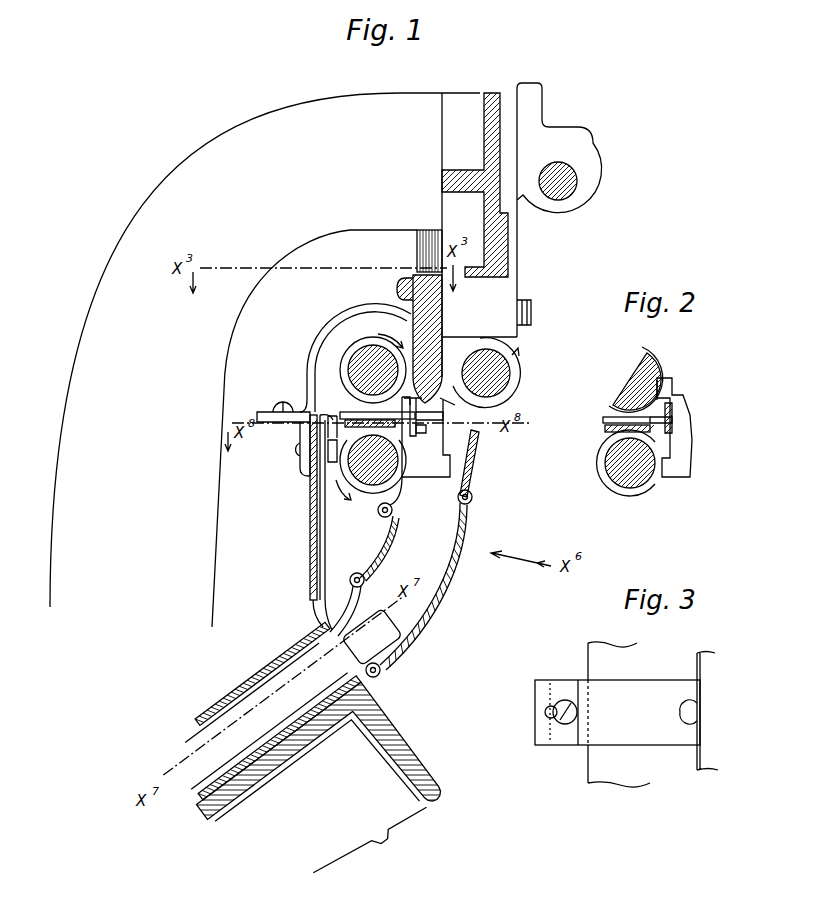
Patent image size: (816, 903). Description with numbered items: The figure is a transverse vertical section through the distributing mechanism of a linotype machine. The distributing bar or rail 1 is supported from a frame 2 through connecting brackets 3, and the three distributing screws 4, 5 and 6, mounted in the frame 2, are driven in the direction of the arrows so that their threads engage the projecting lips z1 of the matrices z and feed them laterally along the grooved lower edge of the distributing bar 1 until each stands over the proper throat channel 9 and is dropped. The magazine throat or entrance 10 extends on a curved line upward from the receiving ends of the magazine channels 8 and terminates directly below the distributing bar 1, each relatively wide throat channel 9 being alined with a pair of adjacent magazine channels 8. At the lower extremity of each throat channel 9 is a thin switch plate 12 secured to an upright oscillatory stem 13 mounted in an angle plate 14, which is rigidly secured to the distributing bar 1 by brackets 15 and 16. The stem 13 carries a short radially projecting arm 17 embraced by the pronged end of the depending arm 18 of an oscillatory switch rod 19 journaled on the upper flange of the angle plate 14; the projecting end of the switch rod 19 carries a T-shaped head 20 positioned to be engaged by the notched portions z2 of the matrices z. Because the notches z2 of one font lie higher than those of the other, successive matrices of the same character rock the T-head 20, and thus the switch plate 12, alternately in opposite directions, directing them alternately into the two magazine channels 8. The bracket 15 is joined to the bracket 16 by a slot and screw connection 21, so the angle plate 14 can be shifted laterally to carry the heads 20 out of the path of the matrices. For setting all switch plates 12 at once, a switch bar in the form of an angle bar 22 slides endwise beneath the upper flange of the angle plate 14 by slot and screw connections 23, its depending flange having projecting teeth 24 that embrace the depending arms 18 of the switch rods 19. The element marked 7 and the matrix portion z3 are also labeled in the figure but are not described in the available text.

In FIG. 1, the distributing bar 1 is at (400, 305).
In FIG. 3, the distributing bar 1 is at (708, 711).
In FIG. 1, the frame 2 is at (265, 360).
In FIG. 1, the connecting brackets 3 is at (513, 249).
In FIG. 1, the distributing screw 4 is at (521, 361).
In FIG. 1, the distributing screw 5 is at (372, 356).
In FIG. 2, the distributing screw 5 is at (634, 378).
In FIG. 1, the distributing screw 6 is at (367, 489).
In FIG. 2, the distributing screw 6 is at (600, 468).
In FIG. 1, the guide chute 7 is at (236, 690).
In FIG. 1, the magazine channels 8 is at (269, 731).
In FIG. 1, the throat channels 9 is at (387, 551).
In FIG. 1, the magazine throat 10 is at (450, 568).
In FIG. 1, the switch plate 12 is at (366, 626).
In FIG. 1, the oscillatory stem 13 is at (308, 615).
In FIG. 1, the angle plate 14 is at (308, 541).
In FIG. 2, the angle plate 14 is at (606, 430).
In FIG. 3, the angle plate 14 is at (582, 777).
In FIG. 1, the bracket 15 is at (298, 448).
In FIG. 1, the bracket 16 is at (307, 358).
In FIG. 3, the bracket 16 is at (617, 712).
In FIG. 1, the radially projecting arm 17 is at (326, 462).
In FIG. 1, the depending arm 18 is at (326, 515).
In FIG. 1, the switch rod 19 is at (345, 410).
In FIG. 2, the switch rod 19 is at (606, 418).
In FIG. 1, the T-shaped head 20 is at (443, 417).
In FIG. 2, the T-shaped head 20 is at (672, 414).
In FIG. 1, the slot and screw connection 21 is at (282, 404).
In FIG. 3, the slot and screw connection 21 is at (554, 716).
In FIG. 1, the angle bar 22 is at (410, 481).
In FIG. 1, the slot and screw connections 23 is at (392, 435).
In FIG. 1, the projecting teeth 24 is at (300, 470).
In FIG. 1, the matrices z is at (479, 462).
In FIG. 2, the matrices z is at (693, 452).
In FIG. 1, the projecting lips z1 is at (478, 352).
In FIG. 2, the projecting lips z1 is at (674, 390).
In FIG. 1, the notched portions z2 is at (426, 436).
In FIG. 2, the notched portions z2 is at (673, 420).
In FIG. 1, the bracket portion z3 is at (380, 340).